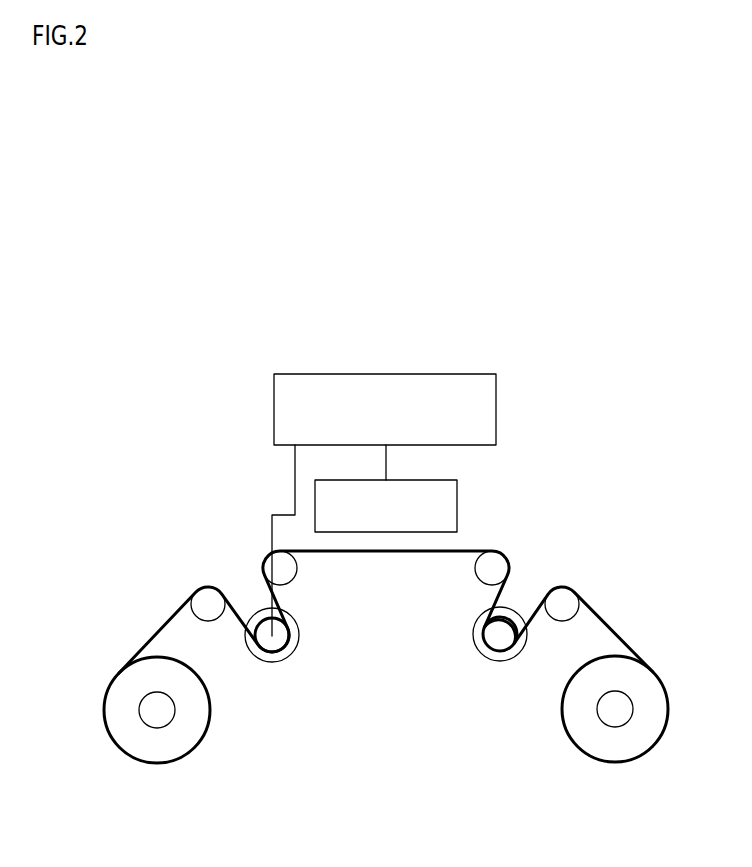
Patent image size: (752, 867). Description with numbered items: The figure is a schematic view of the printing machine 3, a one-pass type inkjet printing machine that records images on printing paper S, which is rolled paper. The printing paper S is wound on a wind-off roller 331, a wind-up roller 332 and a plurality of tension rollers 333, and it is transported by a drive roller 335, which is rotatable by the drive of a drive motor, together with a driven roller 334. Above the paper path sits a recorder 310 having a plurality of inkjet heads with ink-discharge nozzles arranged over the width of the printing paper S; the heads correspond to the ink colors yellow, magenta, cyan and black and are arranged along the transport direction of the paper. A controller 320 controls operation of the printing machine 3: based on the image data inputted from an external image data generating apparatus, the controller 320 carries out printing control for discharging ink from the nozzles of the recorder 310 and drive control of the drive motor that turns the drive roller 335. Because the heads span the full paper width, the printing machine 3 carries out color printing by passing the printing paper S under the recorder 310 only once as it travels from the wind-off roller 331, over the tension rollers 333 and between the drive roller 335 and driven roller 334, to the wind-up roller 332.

The printing machine 3 is at (394, 265).
The recorder 310 is at (457, 506).
The controller 320 is at (496, 408).
The wind-off roller 331 is at (615, 727).
The wind-up roller 332 is at (157, 728).
The tension rollers 333 is at (270, 585).
The driven roller 334 is at (497, 650).
The drive roller 335 is at (282, 660).
The printing paper S is at (354, 551).